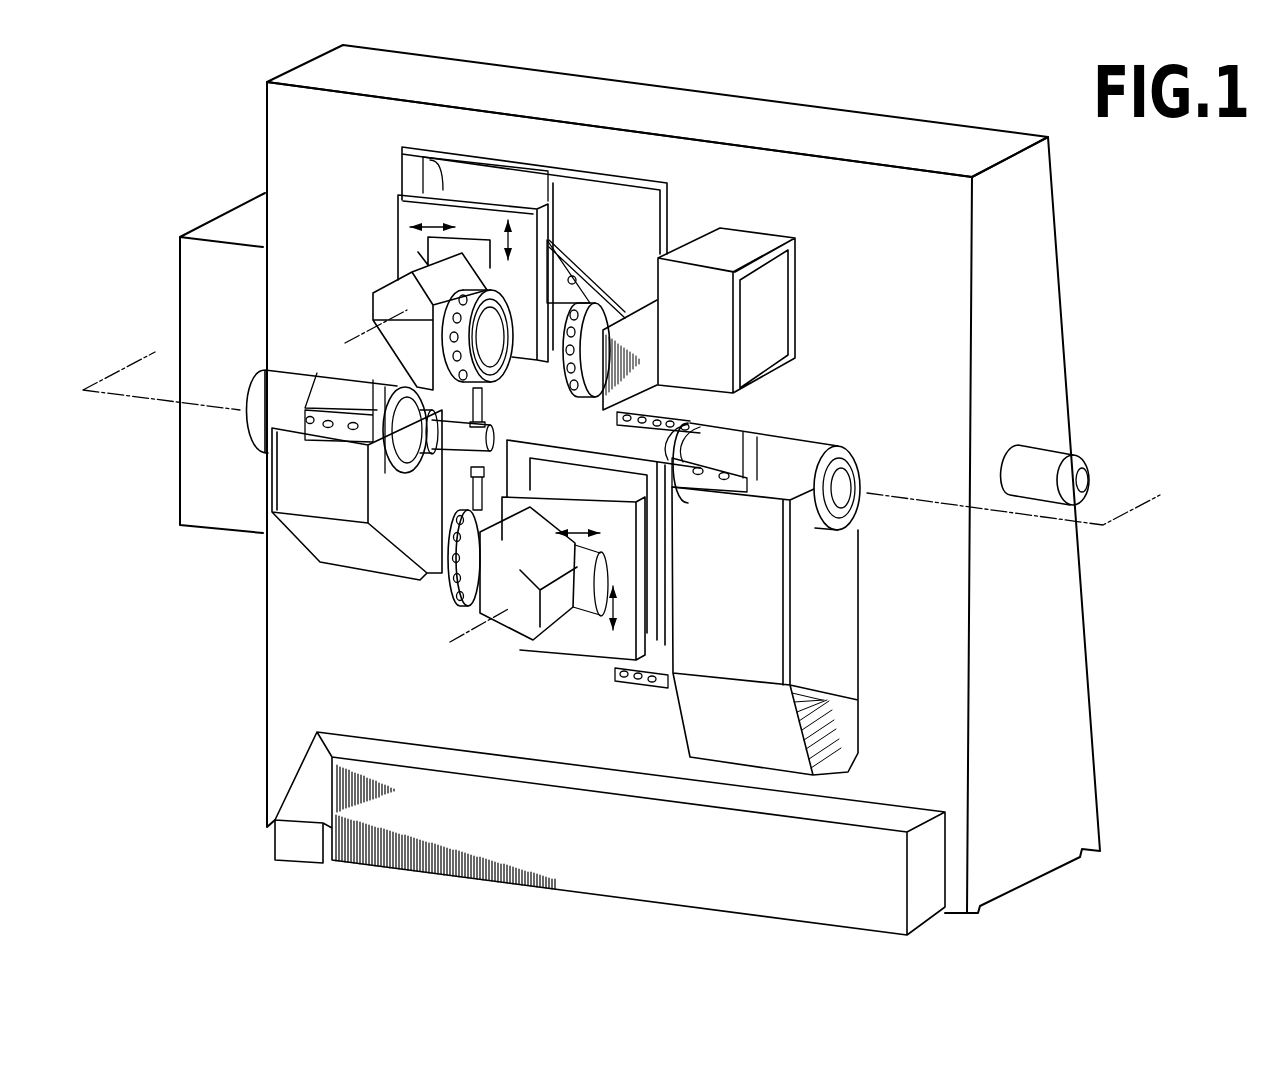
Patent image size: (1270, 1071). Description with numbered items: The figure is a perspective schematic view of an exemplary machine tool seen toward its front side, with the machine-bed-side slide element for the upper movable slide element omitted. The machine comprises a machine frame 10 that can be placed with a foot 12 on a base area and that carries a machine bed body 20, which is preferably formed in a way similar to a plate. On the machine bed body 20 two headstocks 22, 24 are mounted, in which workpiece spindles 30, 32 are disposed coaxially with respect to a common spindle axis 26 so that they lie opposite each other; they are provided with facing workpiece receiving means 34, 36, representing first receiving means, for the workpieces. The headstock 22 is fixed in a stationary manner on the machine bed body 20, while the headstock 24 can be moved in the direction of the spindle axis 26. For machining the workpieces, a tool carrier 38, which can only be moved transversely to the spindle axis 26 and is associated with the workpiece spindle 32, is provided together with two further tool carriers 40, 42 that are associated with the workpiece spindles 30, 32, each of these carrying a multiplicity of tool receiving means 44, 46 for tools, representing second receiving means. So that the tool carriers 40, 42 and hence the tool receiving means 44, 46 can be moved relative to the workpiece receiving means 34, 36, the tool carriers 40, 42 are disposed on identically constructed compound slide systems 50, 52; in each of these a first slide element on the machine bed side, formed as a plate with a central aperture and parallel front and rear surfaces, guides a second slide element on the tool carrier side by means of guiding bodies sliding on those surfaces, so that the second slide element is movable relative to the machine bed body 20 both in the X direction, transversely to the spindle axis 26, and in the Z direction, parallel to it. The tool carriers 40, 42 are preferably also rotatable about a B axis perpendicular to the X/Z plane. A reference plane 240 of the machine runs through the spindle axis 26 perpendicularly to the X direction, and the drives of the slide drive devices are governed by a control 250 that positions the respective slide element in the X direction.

The machine frame 10 is at (1010, 297).
The foot 12 is at (1015, 867).
The machine bed body 20 is at (283, 157).
The headstock 22 is at (283, 490).
The headstock 24 is at (838, 592).
The spindle axis 26 is at (915, 497).
The workpiece spindle 30 is at (350, 380).
The workpiece spindle 32 is at (750, 433).
The workpiece receiving means 34 is at (375, 452).
The workpiece receiving means 36 is at (640, 428).
The tool carrier 38 is at (590, 305).
The tool carrier 40 is at (388, 300).
The tool carrier 42 is at (512, 640).
The tool receiving means 44 is at (433, 258).
The tool receiving means 46 is at (455, 592).
The compound slide system 50 is at (496, 238).
The compound slide system 52 is at (628, 575).
The reference plane 240 is at (1138, 500).
The control 250 is at (203, 297).
The B axis B is at (348, 342).
The X direction X is at (571, 425).
The Z direction Z is at (505, 367).